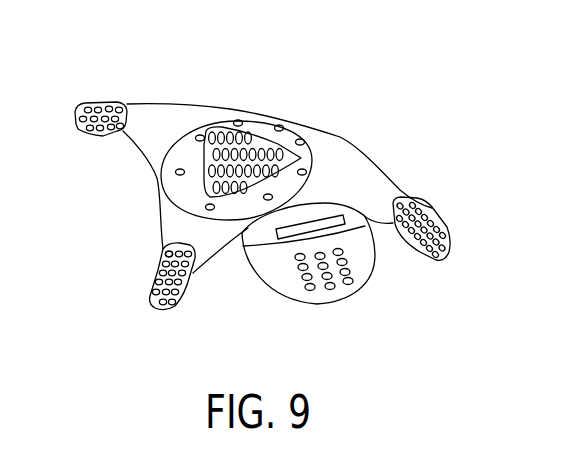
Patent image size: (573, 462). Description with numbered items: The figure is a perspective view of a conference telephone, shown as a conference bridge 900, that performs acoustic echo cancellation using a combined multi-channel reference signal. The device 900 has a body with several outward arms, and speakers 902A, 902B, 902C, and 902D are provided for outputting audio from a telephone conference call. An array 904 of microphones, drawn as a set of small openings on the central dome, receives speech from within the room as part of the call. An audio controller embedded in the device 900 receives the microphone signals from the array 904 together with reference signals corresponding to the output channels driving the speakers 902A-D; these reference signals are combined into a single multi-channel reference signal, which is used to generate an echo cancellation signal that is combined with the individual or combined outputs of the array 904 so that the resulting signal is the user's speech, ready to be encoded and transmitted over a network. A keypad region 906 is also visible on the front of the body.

The conference bridge 900 is at (377, 157).
The speaker 902A is at (437, 203).
The speaker 902B is at (194, 281).
The speaker 902C is at (93, 132).
The speaker 902D is at (203, 179).
The array of microphones 904 is at (240, 121).
The keypad buttons 906 is at (348, 262).